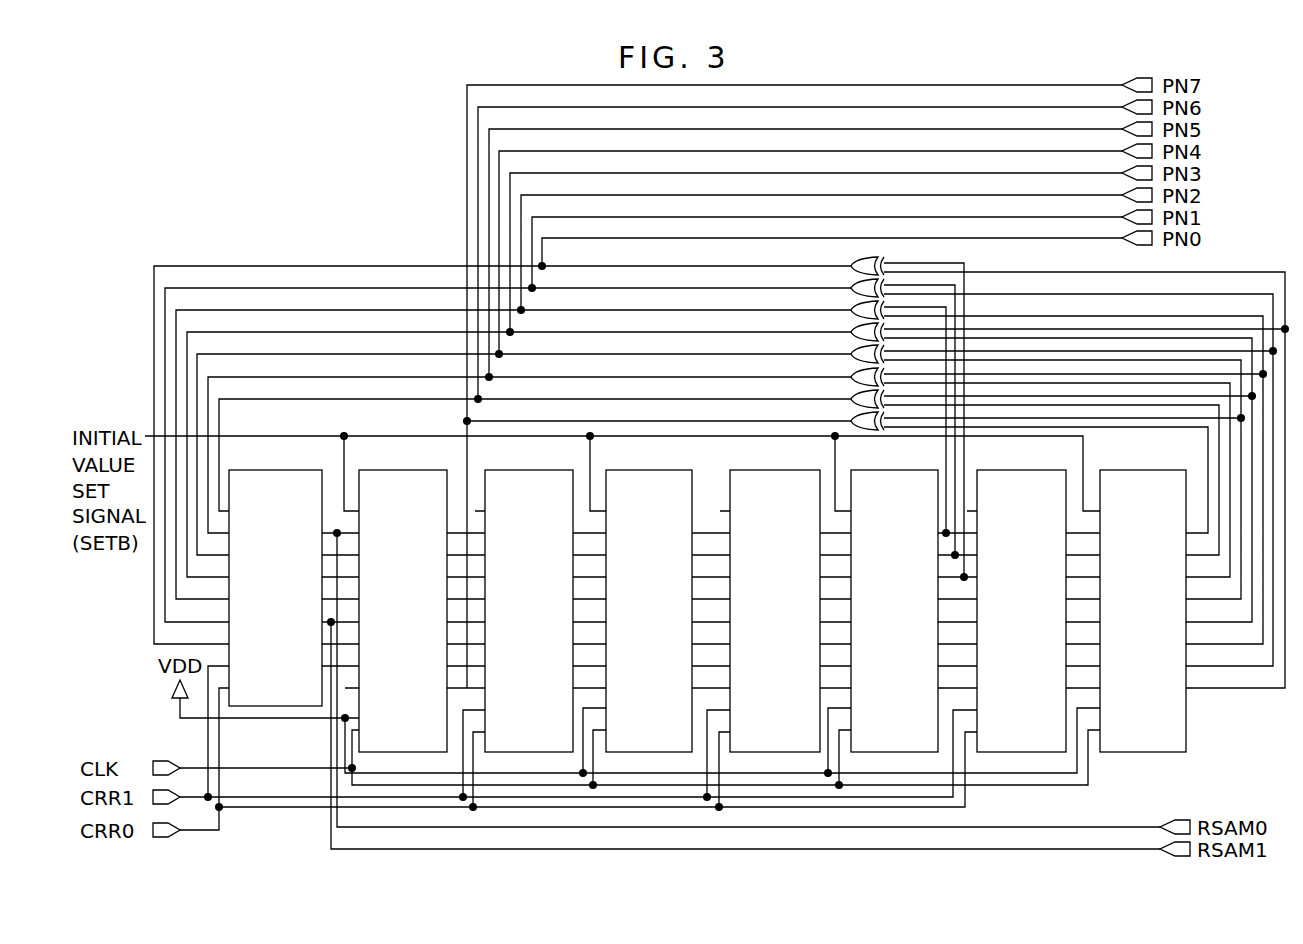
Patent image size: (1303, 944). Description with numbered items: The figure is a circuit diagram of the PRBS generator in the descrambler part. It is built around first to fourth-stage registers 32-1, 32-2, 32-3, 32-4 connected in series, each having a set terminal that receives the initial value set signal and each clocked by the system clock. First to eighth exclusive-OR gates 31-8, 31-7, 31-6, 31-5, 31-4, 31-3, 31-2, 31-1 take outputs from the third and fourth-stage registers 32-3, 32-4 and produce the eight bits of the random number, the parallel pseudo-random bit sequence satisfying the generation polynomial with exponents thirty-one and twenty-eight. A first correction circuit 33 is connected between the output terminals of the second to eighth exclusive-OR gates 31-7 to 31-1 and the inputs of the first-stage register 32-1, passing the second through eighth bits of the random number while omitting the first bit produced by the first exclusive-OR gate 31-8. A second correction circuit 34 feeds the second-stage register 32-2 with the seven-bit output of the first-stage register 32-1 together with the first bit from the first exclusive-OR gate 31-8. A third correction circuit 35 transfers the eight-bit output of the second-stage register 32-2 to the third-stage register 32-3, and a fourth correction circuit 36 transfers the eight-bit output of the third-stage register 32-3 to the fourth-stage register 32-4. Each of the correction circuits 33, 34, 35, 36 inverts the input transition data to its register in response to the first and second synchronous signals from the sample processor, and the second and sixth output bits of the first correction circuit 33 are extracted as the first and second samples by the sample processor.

The eighth exclusive-OR gate 31-1 is at (834, 259).
The seventh exclusive-OR gate 31-2 is at (834, 281).
The sixth exclusive-OR gate 31-3 is at (834, 303).
The fifth exclusive-OR gate 31-4 is at (834, 325).
The fourth exclusive-OR gate 31-5 is at (834, 347).
The third exclusive-OR gate 31-6 is at (834, 370).
The second exclusive-OR gate 31-7 is at (834, 392).
The first exclusive-OR gate 31-8 is at (834, 414).
The first-stage register 32-1 is at (367, 470).
The second-stage register 32-2 is at (612, 470).
The third-stage register 32-3 is at (857, 470).
The fourth-stage register 32-4 is at (1109, 470).
The first correction circuit 33 is at (256, 470).
The second correction circuit 34 is at (511, 470).
The third correction circuit 35 is at (757, 470).
The fourth correction circuit 36 is at (1004, 470).